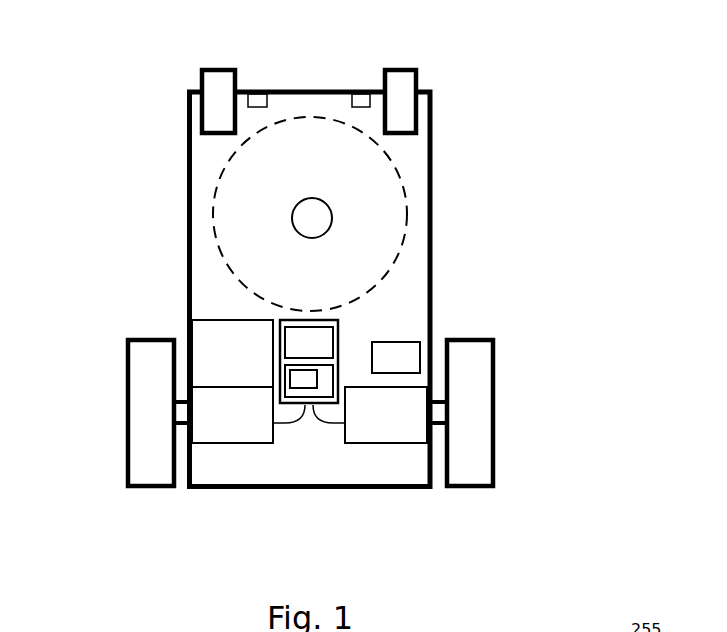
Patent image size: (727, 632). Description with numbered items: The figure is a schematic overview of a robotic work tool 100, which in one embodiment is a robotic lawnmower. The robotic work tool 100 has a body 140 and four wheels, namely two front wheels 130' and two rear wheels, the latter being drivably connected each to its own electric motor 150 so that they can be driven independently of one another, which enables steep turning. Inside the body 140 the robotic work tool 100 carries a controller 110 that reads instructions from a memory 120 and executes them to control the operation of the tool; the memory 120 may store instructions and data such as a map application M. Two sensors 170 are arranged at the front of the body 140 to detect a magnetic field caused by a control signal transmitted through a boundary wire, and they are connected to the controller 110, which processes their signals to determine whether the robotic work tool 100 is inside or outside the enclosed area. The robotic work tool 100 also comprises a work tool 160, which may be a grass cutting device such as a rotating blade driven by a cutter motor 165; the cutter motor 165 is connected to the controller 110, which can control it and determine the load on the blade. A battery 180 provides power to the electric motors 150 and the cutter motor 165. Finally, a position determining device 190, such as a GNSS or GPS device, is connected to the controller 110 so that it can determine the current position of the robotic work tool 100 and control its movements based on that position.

The robotic work tool 100 is at (331, 292).
The controller 110 is at (340, 340).
The memory 120 is at (333, 380).
The front wheels 130' is at (370, 128).
The body 140 is at (210, 488).
The electric motor 150 is at (349, 425).
The work tool 160 is at (220, 257).
The cutter motor 165 is at (292, 227).
The sensor 170 is at (343, 90).
The battery 180 is at (203, 342).
The position determining device 190 is at (420, 358).